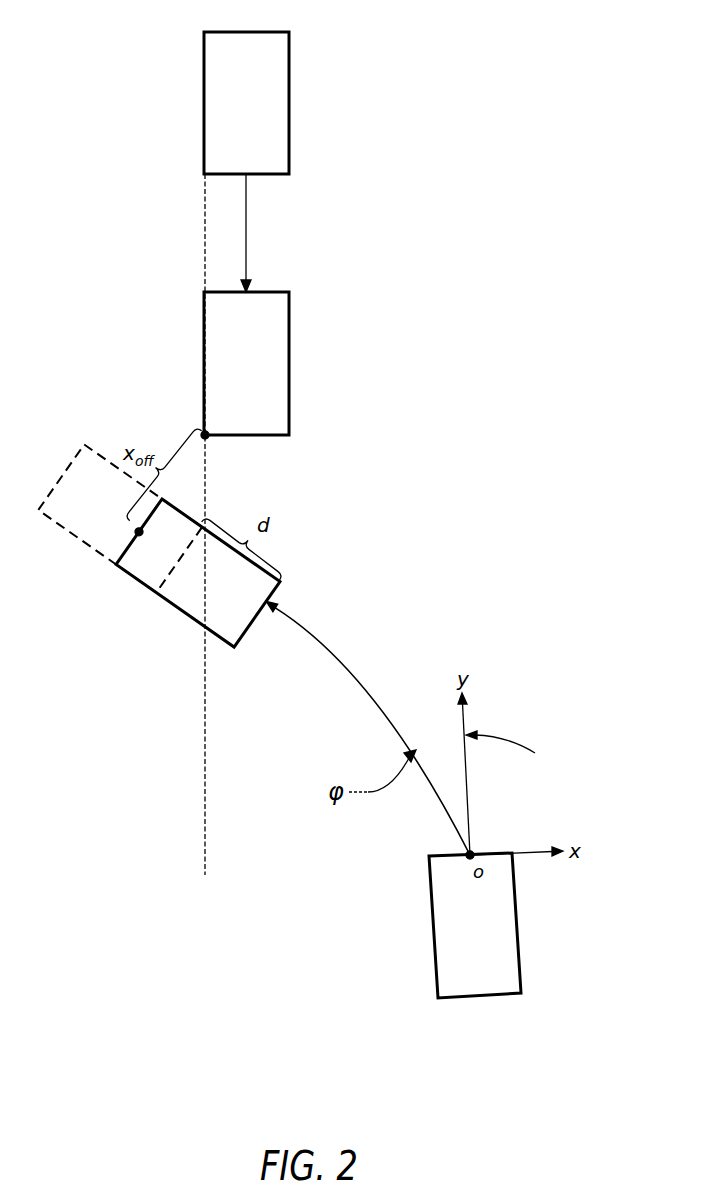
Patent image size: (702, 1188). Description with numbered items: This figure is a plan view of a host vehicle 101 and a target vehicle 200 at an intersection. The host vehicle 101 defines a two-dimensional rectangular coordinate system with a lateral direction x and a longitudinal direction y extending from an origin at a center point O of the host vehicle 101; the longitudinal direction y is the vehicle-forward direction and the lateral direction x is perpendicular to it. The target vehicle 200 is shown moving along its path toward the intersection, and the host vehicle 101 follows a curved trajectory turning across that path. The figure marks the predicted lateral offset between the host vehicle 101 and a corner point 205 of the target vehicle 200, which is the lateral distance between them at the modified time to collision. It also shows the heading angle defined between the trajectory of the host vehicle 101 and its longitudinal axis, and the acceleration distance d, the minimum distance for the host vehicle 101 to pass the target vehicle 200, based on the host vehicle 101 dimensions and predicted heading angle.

The target vehicle 200 is at (290, 57).
The corner point 205 is at (208, 438).
The host vehicle 101 is at (243, 633).